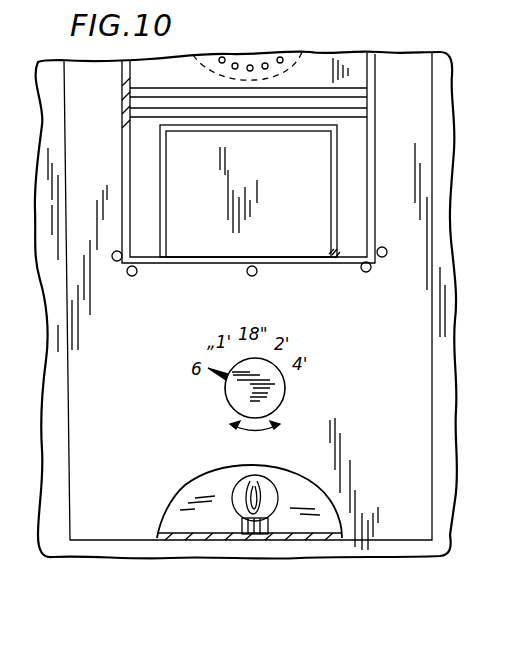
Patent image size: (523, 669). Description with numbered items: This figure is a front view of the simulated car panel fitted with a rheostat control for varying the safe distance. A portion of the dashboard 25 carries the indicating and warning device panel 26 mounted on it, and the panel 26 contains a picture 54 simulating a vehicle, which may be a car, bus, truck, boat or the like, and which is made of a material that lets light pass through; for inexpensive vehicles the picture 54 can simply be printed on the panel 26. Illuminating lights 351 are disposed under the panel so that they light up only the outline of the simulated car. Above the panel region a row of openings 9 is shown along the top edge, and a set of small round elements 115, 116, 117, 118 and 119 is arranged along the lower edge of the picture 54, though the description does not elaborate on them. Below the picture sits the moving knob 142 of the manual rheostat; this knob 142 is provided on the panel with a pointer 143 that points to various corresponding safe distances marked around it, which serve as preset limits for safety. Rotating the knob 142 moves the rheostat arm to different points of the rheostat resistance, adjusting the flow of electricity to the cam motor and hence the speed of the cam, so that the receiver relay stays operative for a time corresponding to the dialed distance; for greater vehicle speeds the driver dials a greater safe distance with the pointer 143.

The ventilation holes 9 is at (300, 56).
The picture 54 is at (374, 141).
The dashboard 25 is at (450, 468).
The indicating and warning device panel 26 is at (400, 430).
The knob 115 is at (382, 257).
The knob 116 is at (365, 272).
The knob 117 is at (253, 276).
The knob 118 is at (137, 275).
The knob 119 is at (115, 262).
The moving knob 142 is at (283, 396).
The pointer 143 is at (221, 378).
The illuminating lights 351 is at (234, 490).